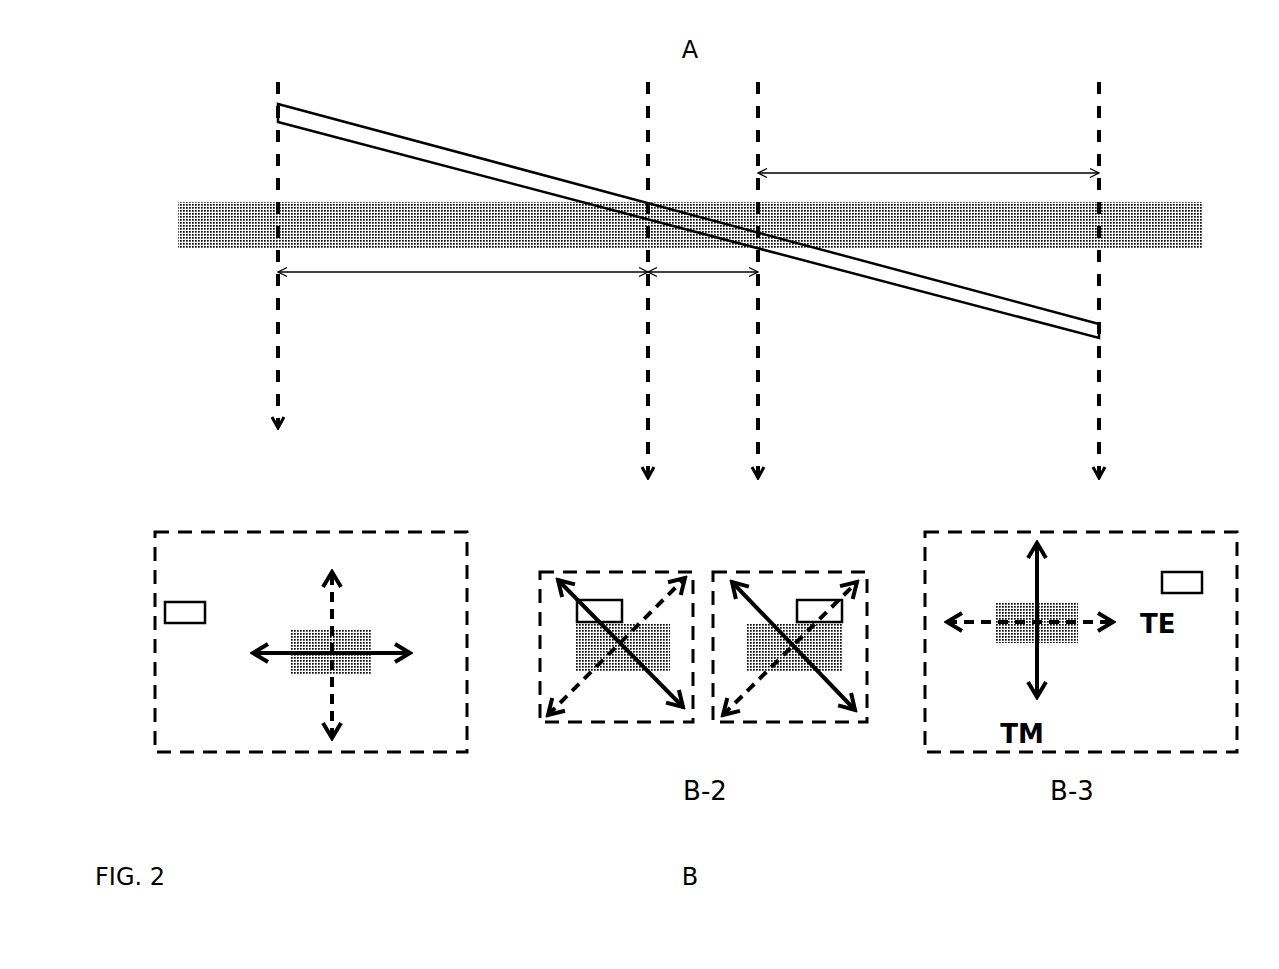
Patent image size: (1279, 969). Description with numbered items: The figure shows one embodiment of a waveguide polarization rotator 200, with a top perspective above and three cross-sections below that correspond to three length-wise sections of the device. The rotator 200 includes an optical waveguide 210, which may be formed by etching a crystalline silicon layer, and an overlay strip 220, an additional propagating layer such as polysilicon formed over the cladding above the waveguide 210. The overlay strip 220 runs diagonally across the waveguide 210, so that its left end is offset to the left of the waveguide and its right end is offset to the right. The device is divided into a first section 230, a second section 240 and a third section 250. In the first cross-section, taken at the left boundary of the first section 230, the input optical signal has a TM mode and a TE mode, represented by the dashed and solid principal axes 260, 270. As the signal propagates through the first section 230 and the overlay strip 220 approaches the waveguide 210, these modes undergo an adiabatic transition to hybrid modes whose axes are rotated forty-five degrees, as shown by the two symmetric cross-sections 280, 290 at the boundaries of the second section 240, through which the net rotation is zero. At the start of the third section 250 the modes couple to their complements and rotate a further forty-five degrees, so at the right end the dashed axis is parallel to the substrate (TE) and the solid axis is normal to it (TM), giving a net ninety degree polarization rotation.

The waveguide polarization rotator 200 is at (165, 125).
The optical waveguide 210 is at (192, 240).
The overlay strip 220 is at (1048, 327).
The first section 230 is at (437, 330).
The second section 240 is at (718, 467).
The third section 250 is at (945, 118).
The TM mode 260 is at (320, 740).
The TE mode 270 is at (405, 645).
The first hybrid mode 280 is at (660, 700).
The second hybrid mode 290 is at (745, 700).